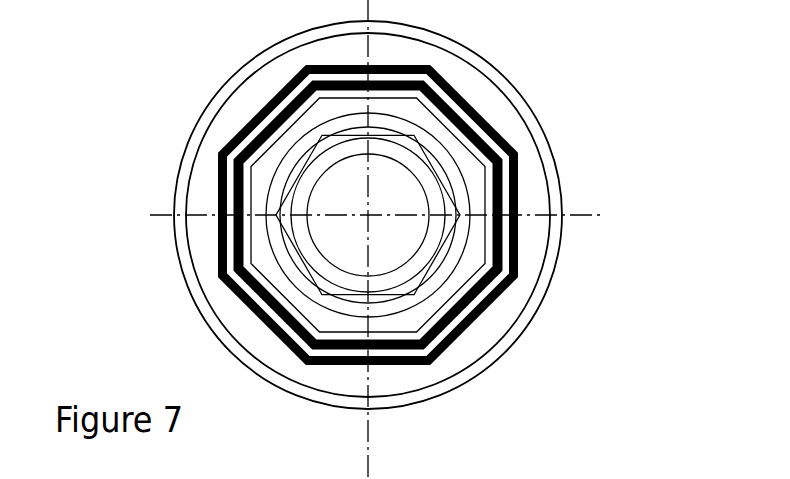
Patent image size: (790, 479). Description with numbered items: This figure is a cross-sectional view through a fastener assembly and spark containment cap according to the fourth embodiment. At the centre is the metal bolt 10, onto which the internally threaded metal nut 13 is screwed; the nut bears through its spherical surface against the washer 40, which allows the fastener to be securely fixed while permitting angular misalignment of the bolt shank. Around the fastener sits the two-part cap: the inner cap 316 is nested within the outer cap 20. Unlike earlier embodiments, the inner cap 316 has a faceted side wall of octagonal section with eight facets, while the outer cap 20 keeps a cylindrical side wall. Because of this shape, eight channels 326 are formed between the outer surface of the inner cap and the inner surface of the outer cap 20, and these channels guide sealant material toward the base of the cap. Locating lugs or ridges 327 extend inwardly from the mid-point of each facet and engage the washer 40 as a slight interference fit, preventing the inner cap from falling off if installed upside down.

The metal bolt 10 is at (333, 238).
The internally threaded metal nut 13 is at (292, 180).
The outer cap 20 is at (518, 237).
The washer 40 is at (285, 118).
The inner cap 316 is at (502, 187).
The channels 326 is at (486, 131).
The locating lugs or ridges 327 is at (234, 217).